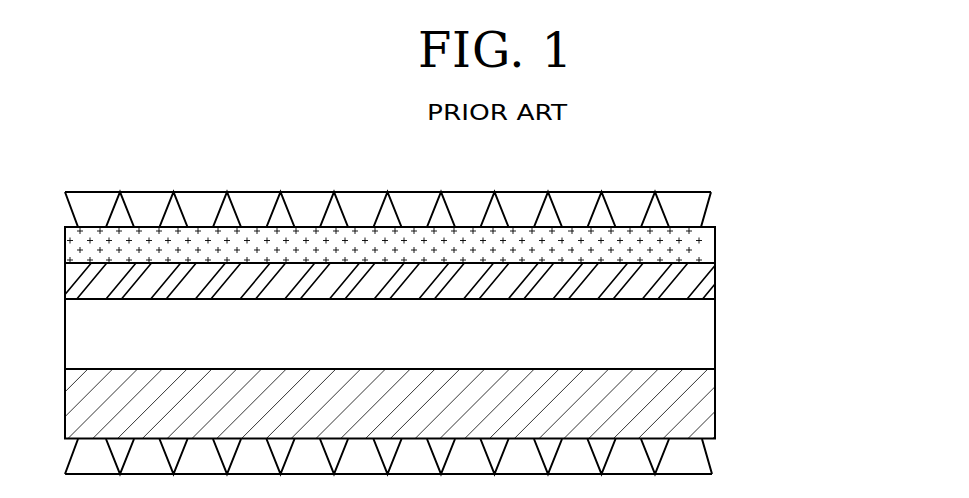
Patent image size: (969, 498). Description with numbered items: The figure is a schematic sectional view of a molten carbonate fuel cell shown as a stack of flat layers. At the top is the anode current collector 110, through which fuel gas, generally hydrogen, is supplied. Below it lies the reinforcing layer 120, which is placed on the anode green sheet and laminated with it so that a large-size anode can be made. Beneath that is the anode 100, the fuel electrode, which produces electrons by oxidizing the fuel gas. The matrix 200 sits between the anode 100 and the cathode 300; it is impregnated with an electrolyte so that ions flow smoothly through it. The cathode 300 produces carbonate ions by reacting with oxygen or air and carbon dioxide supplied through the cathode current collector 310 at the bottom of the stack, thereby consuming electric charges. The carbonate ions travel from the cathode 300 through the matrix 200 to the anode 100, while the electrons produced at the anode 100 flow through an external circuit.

The anode current collector 110 is at (712, 196).
The reinforcing layer 120 is at (717, 242).
The anode 100 is at (717, 277).
The matrix 200 is at (718, 330).
The cathode 300 is at (718, 385).
The cathode current collector 310 is at (705, 455).